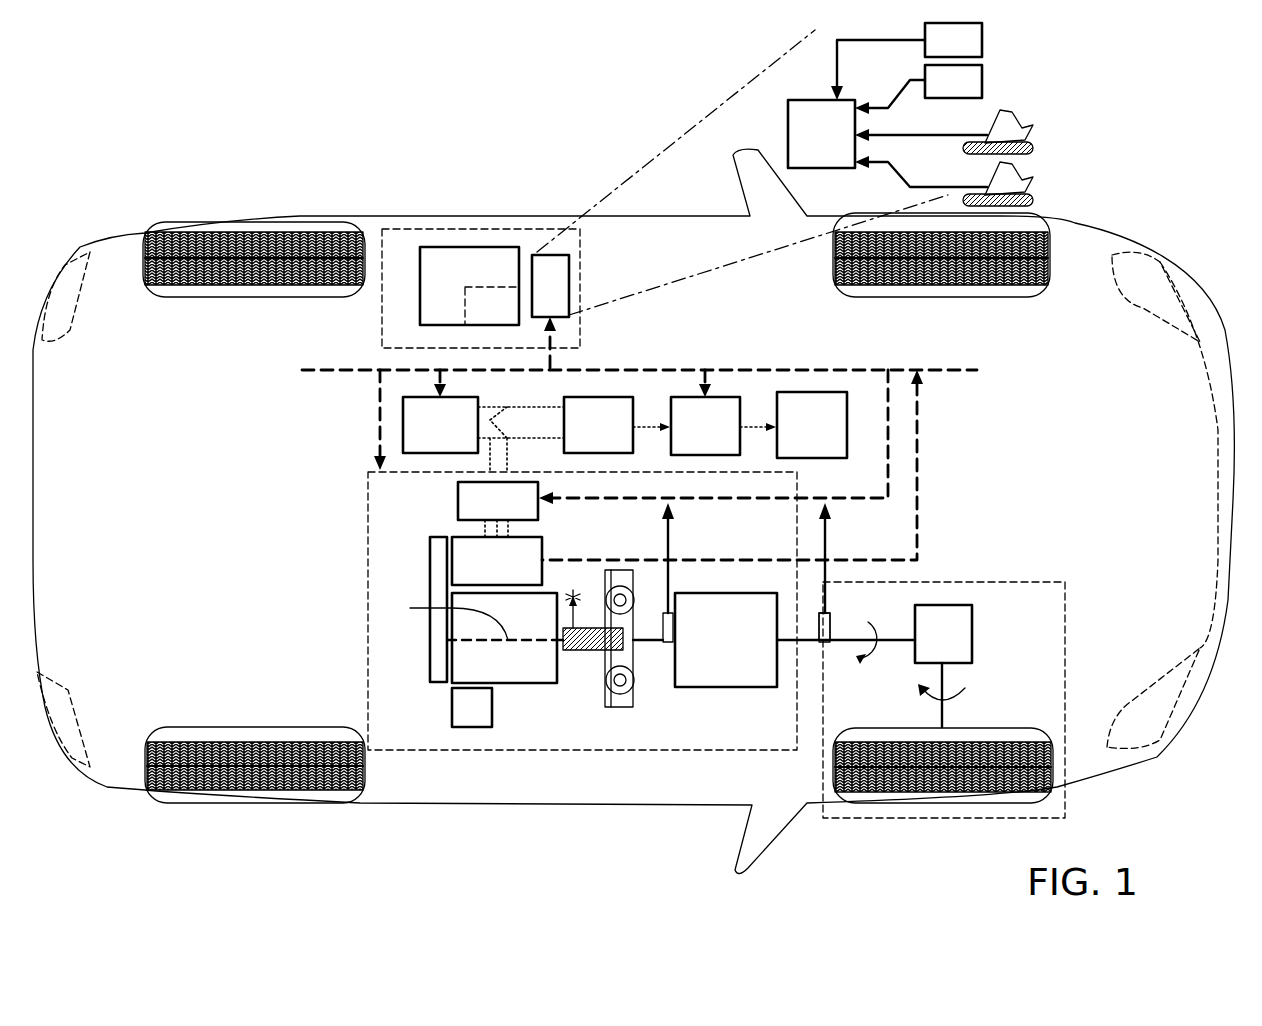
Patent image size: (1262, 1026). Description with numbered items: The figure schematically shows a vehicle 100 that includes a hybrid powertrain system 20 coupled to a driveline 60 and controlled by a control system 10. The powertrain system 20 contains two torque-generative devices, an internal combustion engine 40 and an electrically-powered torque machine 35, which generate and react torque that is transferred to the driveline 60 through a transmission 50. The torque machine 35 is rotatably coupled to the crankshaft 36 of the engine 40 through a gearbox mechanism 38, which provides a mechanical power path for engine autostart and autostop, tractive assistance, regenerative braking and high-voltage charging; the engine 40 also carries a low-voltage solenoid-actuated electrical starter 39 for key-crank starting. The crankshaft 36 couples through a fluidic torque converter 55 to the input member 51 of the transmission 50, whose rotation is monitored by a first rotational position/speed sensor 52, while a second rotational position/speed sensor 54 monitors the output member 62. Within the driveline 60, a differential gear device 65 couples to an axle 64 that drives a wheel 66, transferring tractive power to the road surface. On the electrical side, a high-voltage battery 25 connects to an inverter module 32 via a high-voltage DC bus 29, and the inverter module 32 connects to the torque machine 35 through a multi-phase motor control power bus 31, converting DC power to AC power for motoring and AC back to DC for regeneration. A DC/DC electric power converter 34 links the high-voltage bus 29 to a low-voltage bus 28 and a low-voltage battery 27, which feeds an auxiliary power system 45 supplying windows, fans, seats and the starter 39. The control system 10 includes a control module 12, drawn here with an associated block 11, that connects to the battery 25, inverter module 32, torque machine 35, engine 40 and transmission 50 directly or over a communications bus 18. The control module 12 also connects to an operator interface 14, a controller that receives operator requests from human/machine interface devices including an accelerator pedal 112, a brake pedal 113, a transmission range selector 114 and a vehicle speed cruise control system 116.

The vehicle 100 is at (1036, 346).
The control system 10 is at (481, 298).
The control module 12 is at (482, 285).
The memory 11 is at (503, 321).
The operator interface 14 is at (833, 147).
The accelerator pedal 112 is at (985, 185).
The brake pedal 113 is at (985, 133).
The transmission range selector 114 is at (970, 94).
The vehicle speed cruise control system 116 is at (970, 52).
The communications bus 18 is at (350, 358).
The hybrid powertrain system 20 is at (812, 545).
The high-voltage battery 25 is at (453, 437).
The low-voltage battery 27 is at (718, 439).
The low-voltage bus 28 is at (655, 427).
The high-voltage DC bus 29 is at (535, 438).
The multi-phase motor control power bus 31 is at (485, 530).
The inverter module 32 is at (511, 514).
The DC/DC electric power converter 34 is at (611, 437).
The torque machine 35 is at (510, 572).
The crankshaft 36 is at (446, 619).
The gearbox mechanism 38 is at (430, 632).
The low-voltage solenoid-actuated electrical starter 39 is at (452, 718).
The internal combustion engine 40 is at (515, 672).
The auxiliary power system 45 is at (824, 438).
The transmission 50 is at (737, 653).
The input member 51 is at (663, 642).
The first rotational position/speed sensor 52 is at (675, 625).
The second rotational position/speed sensor 54 is at (830, 626).
The torque converter 55 is at (580, 690).
The driveline 60 is at (975, 578).
The output member 62 is at (815, 640).
The axle 64 is at (960, 686).
The differential gear device 65 is at (957, 646).
The wheel 66 is at (902, 718).